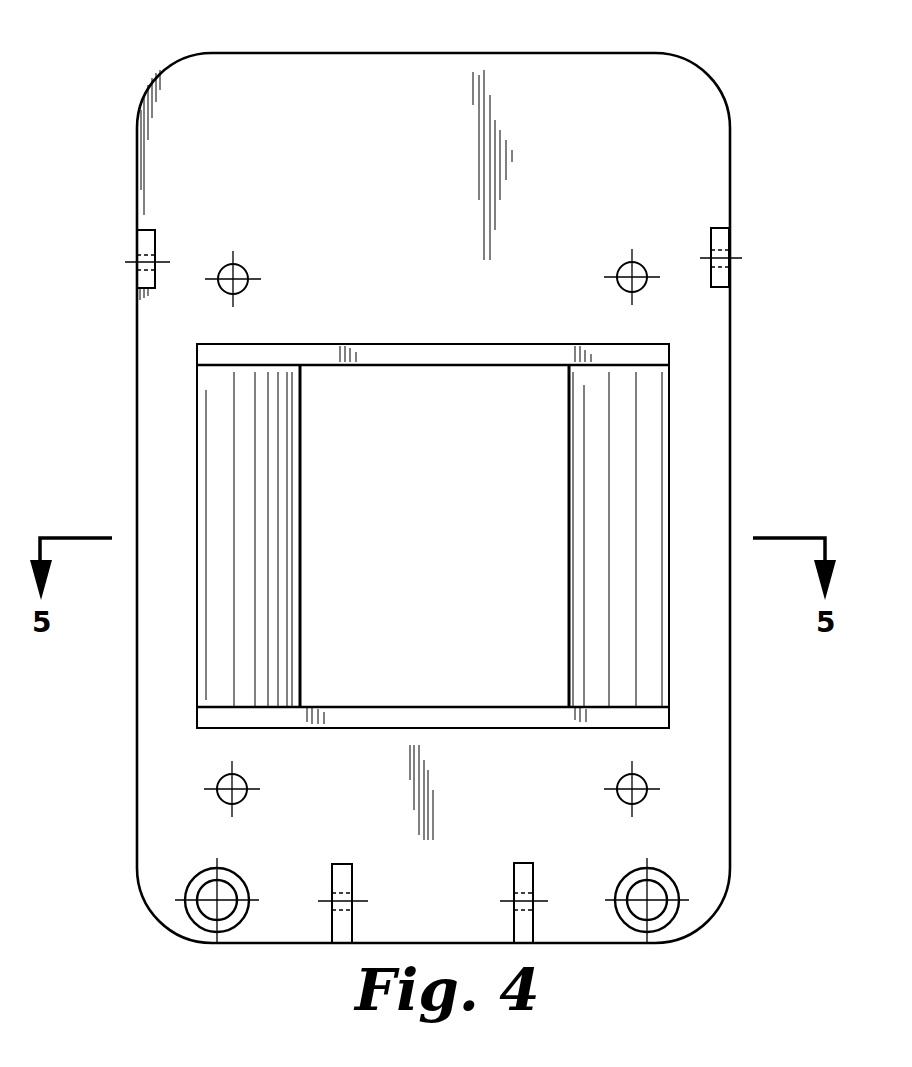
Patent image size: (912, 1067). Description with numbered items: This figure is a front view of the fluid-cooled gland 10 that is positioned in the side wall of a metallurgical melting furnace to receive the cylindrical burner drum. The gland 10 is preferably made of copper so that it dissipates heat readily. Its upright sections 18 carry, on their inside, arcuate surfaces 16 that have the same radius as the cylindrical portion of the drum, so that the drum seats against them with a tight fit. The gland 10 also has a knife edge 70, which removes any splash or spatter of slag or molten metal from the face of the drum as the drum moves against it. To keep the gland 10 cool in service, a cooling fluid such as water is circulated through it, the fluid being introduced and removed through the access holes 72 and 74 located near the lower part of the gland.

The fluid-cooled gland 10 is at (596, 50).
The arcuate surfaces 16 is at (270, 437).
The upright sections 18 is at (161, 451).
The knife edge 70 is at (569, 545).
The access hole 72 is at (200, 915).
The access hole 74 is at (660, 915).